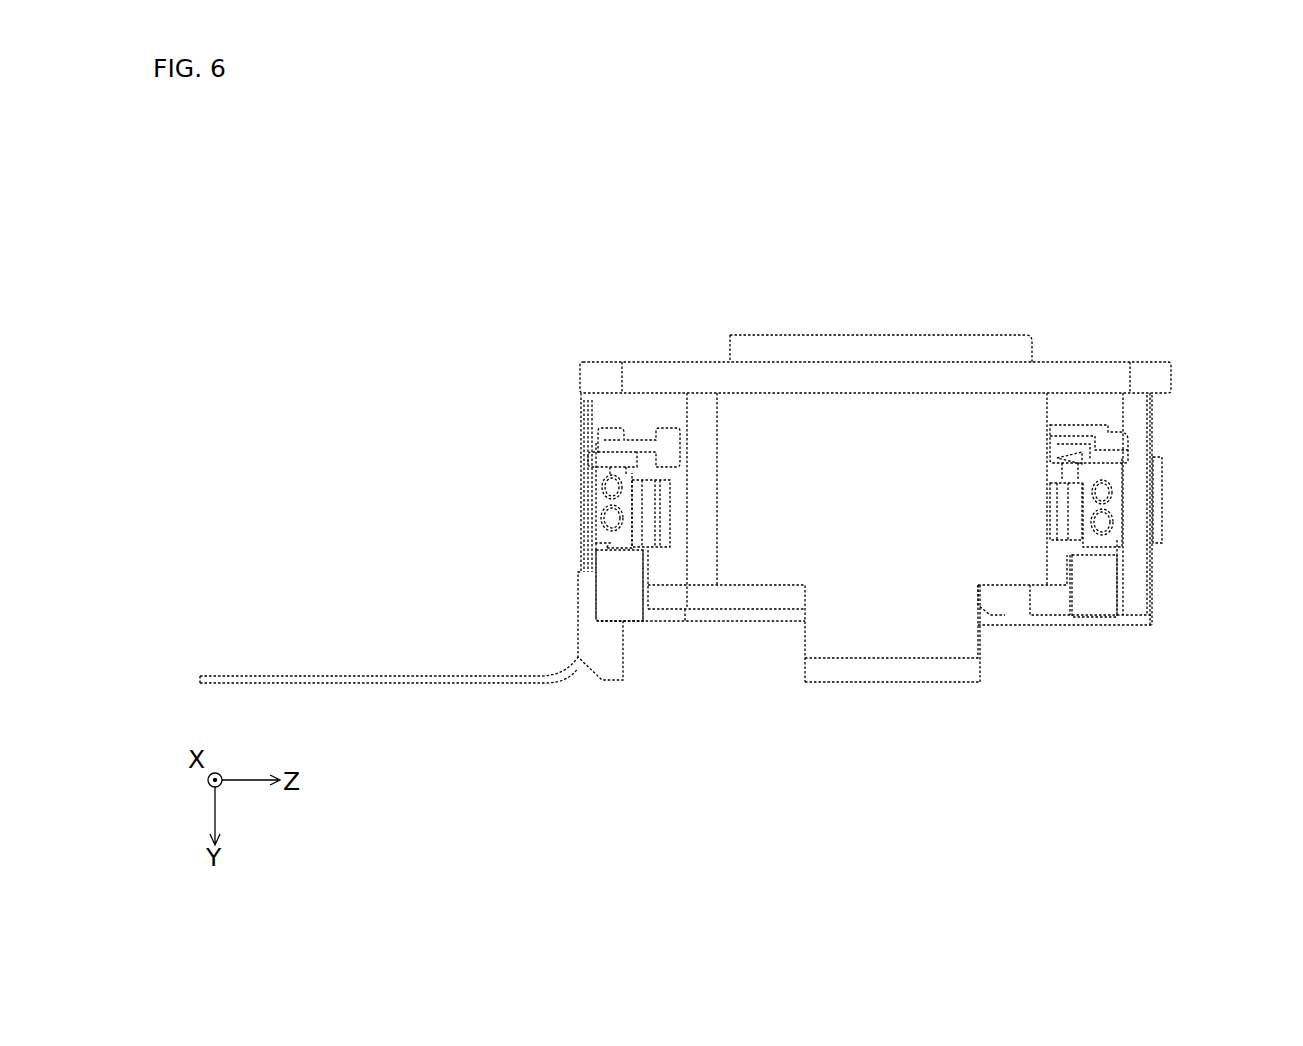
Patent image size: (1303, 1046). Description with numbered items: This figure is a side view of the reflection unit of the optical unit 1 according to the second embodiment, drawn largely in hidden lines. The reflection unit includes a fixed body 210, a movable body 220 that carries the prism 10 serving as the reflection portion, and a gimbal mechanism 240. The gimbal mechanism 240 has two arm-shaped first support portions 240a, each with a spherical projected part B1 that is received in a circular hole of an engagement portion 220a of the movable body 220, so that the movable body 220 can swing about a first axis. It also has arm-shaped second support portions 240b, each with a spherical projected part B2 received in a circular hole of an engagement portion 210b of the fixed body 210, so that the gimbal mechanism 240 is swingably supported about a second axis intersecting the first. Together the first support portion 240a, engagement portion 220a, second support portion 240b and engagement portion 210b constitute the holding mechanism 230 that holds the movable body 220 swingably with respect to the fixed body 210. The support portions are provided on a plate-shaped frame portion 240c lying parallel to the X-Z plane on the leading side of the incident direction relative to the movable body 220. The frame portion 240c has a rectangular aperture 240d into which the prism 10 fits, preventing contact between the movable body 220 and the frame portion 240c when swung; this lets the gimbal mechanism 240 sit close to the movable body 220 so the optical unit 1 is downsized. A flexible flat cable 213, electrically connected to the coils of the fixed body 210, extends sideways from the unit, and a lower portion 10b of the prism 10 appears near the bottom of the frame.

The optical unit 1 is at (1104, 241).
The prism 10 is at (903, 345).
The lower portion of circuit board 10b is at (1010, 622).
The fixed body 210 is at (757, 403).
The engagement portion 210b is at (603, 516).
The flexible flat cable (FFC) 213 is at (353, 677).
The movable body 220 is at (1078, 452).
The engagement portion 220a is at (1118, 532).
The holding mechanism 230 is at (575, 467).
The gimbal mechanism 240 is at (777, 623).
The first support portion 240a is at (1100, 578).
The second support portion 240b is at (612, 584).
The frame portion 240c is at (718, 622).
The aperture 240d is at (983, 608).
The spherical projected part B1 is at (1105, 488).
The spherical projected part B2 is at (612, 486).